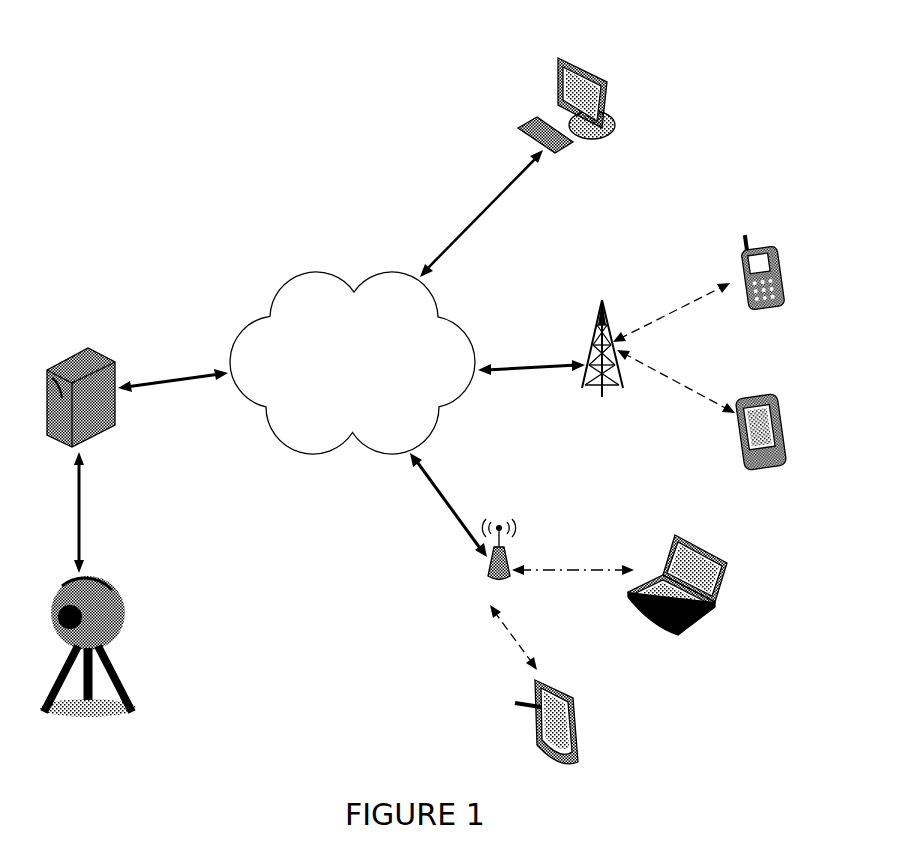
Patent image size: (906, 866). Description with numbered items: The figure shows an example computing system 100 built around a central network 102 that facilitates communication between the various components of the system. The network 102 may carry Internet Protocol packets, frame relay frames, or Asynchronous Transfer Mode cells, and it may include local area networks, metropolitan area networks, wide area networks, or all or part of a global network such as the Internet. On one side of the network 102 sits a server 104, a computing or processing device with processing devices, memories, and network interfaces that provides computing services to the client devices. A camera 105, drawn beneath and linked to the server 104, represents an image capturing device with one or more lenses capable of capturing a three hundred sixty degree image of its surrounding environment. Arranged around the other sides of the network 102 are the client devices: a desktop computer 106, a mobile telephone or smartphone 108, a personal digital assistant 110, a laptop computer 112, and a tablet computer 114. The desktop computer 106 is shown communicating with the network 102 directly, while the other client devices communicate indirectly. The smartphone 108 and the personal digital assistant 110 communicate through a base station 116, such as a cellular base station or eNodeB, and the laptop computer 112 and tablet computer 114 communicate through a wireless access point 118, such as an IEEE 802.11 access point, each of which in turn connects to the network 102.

The computing system 100 is at (194, 144).
The network 102 is at (273, 277).
The server 104 is at (62, 365).
The camera 105 is at (67, 590).
The desktop computer 106 is at (558, 62).
The mobile telephone or smartphone 108 is at (777, 255).
The personal digital assistant (PDA) 110 is at (778, 407).
The laptop computer 112 is at (728, 572).
The tablet computer 114 is at (577, 717).
The base station 116 is at (623, 383).
The wireless access point 118 is at (508, 558).